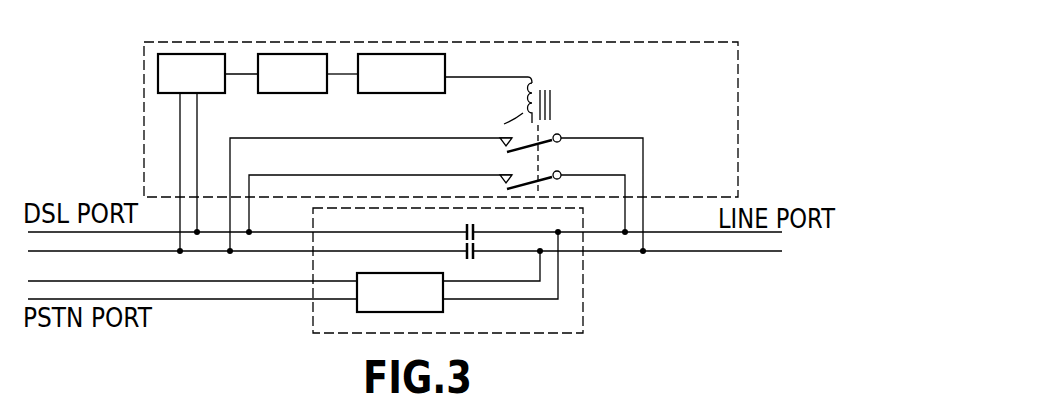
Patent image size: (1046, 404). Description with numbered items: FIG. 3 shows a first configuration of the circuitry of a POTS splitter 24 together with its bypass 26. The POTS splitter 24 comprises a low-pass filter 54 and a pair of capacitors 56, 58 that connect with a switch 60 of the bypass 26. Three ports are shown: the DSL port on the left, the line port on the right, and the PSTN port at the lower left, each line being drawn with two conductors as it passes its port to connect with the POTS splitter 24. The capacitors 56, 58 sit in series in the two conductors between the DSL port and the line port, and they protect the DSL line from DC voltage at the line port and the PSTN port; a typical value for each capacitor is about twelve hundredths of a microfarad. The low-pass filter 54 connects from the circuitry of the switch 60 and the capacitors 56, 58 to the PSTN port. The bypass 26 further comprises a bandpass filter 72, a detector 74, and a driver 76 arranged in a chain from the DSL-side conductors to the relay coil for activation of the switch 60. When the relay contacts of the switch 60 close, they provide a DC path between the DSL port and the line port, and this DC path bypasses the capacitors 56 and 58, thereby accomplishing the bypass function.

The POTS splitter 24 is at (572, 333).
The bypass 26 is at (597, 42).
The low-pass filter 54 is at (447, 312).
The capacitor 56 is at (475, 229).
The capacitor 58 is at (475, 256).
The switch 60 is at (560, 110).
The bandpass filter 72 is at (208, 93).
The detector 74 is at (310, 93).
The driver 76 is at (420, 93).